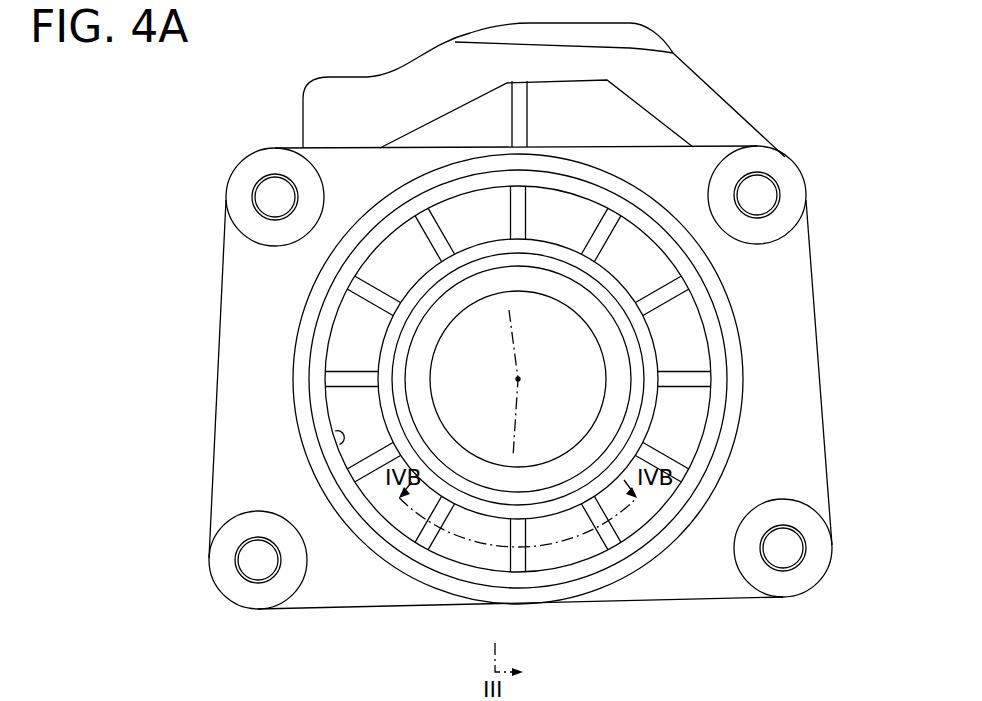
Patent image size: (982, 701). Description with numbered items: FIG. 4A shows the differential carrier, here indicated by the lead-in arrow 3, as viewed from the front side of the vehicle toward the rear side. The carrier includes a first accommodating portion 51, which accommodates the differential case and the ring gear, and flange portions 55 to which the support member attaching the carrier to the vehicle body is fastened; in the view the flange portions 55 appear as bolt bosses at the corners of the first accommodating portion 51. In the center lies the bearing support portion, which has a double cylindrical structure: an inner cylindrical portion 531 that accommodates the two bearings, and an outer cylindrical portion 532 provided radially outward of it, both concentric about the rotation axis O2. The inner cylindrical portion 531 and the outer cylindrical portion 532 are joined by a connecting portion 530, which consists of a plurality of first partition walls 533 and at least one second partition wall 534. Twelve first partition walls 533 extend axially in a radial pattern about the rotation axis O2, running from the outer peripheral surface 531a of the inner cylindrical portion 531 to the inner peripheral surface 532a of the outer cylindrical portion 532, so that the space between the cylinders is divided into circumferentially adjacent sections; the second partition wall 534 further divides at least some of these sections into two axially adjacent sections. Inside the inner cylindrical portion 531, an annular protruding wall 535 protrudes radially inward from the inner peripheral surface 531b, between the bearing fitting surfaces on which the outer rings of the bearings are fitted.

The motor 3 is at (340, 36).
The first accommodating portion 51 is at (822, 375).
The flange portion 55 is at (252, 172).
The connecting portion 530 is at (511, 419).
The inner cylindrical portion 531 is at (650, 337).
The outer peripheral surface 531a is at (450, 373).
The inner peripheral surface 531b is at (518, 379).
The outer cylindrical portion 532 is at (715, 330).
The inner peripheral surface 532a is at (340, 444).
The first partition wall 533 is at (520, 557).
The second partition wall 534 is at (467, 550).
The annular protruding wall 535 is at (600, 432).
The rotation axis O2 is at (518, 379).